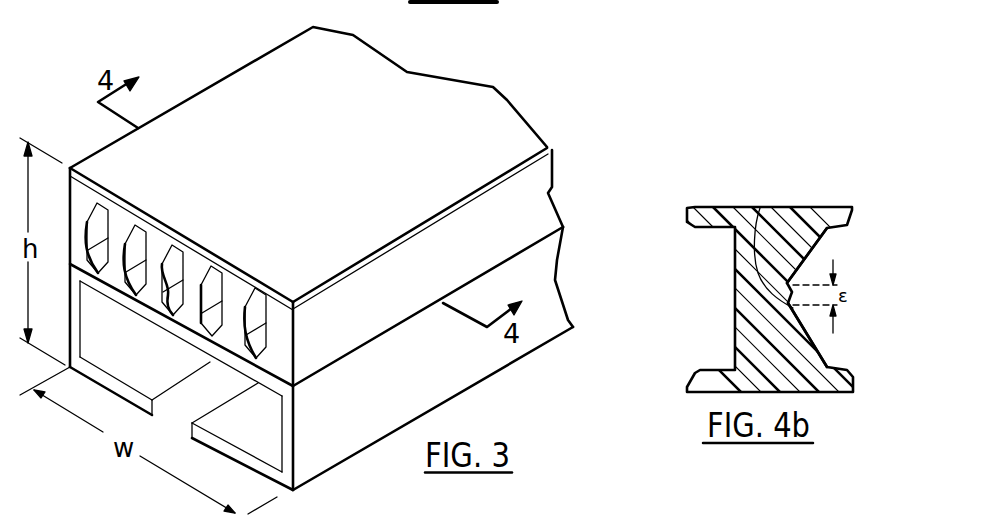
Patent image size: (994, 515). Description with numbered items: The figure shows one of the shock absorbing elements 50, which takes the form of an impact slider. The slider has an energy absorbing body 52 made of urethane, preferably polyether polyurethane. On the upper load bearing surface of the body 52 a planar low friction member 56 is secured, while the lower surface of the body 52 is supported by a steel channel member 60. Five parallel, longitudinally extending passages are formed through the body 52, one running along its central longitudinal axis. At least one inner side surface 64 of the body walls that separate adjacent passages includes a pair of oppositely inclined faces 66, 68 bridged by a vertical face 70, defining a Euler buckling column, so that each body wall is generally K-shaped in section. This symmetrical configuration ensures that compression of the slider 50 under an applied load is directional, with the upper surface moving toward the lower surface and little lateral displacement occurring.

In FIG. 3, the shock absorbing element 50 is at (341, 245).
In FIG. 3, the energy absorbing body 52 is at (530, 203).
In FIG. 3, the planar low friction member 56 is at (490, 123).
In FIG. 3, the steel channel member 60 is at (542, 297).
In FIG. 3, the inner side surface 64 is at (253, 283).
In FIG. 3, the inclined face 66 is at (174, 305).
In FIG. 4b, the inclined face 66 is at (825, 238).
In FIG. 3, the inclined face 68 is at (180, 330).
In FIG. 4b, the inclined face 68 is at (822, 360).
In FIG. 4b, the vertical face 70 is at (760, 208).